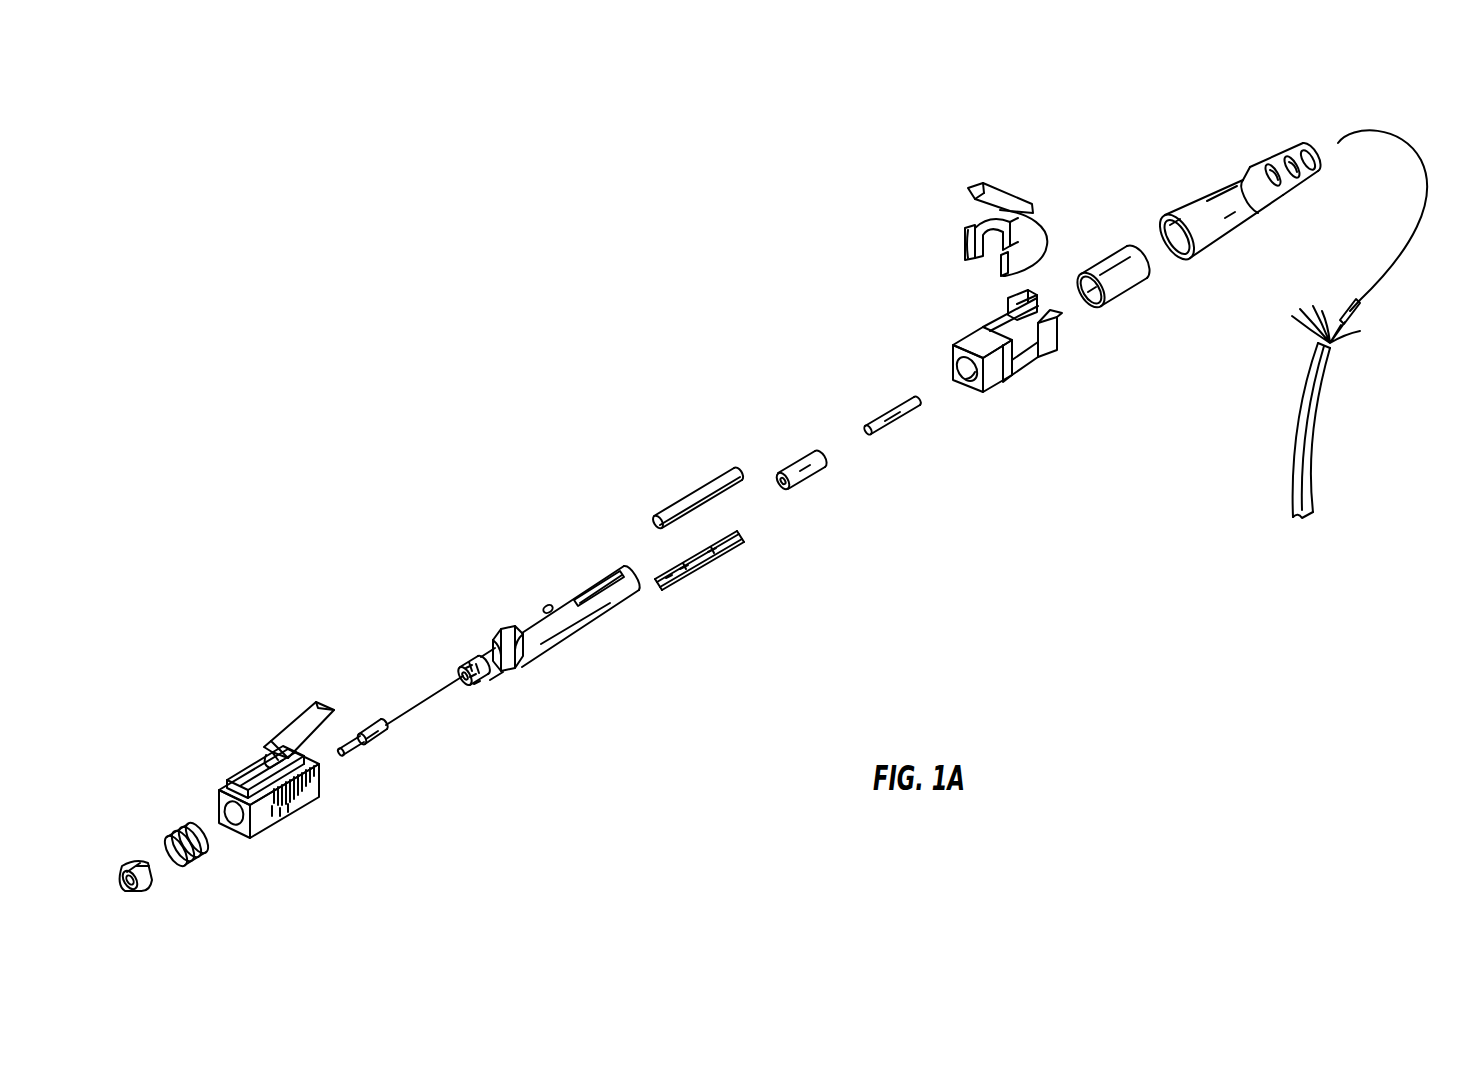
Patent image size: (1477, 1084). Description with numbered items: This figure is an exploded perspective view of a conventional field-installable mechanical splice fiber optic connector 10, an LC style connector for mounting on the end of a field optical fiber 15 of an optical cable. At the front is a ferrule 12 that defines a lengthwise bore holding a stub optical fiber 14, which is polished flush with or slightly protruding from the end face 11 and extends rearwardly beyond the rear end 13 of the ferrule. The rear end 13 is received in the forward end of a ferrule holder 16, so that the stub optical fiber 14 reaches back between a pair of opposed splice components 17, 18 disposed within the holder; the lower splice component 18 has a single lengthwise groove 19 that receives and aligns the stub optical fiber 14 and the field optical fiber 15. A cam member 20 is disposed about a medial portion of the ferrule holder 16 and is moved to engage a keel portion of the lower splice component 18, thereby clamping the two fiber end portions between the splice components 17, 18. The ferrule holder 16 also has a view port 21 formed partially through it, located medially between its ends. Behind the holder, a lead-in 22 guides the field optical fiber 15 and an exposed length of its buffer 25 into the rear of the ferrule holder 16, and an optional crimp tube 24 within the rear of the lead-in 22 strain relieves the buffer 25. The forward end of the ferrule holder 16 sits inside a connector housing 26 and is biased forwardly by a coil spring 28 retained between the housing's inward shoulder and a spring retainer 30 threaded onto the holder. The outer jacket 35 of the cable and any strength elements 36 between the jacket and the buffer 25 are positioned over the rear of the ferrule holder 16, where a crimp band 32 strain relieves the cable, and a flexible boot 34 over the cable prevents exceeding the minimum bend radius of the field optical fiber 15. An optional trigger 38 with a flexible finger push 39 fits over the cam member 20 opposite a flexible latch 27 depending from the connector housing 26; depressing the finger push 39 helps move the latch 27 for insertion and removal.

The fiber optic connector 10 is at (718, 292).
The end face 11 is at (339, 757).
The ferrule 12 is at (365, 724).
The rear end 13 is at (380, 724).
The stub optical fiber 14 is at (425, 698).
The field optical fiber 15 is at (1421, 228).
The ferrule holder 16 is at (582, 627).
The splice component 17 is at (690, 497).
The lower splice component 18 is at (700, 566).
The groove 19 is at (672, 572).
The cam member 20 is at (1054, 353).
The view port 21 is at (546, 606).
The lead-in 22 is at (808, 480).
The crimp tube 24 is at (890, 425).
The buffer 25 is at (1361, 326).
The connector housing 26 is at (272, 824).
The latch 27 is at (300, 728).
The coil spring 28 is at (185, 826).
The spring retainer 30 is at (148, 883).
The crimp band 32 is at (1101, 253).
The boot 34 is at (1226, 238).
The outer jacket 35 is at (1270, 447).
The strength elements 36 is at (1340, 352).
The trigger 38 is at (1030, 232).
The finger push 39 is at (983, 203).